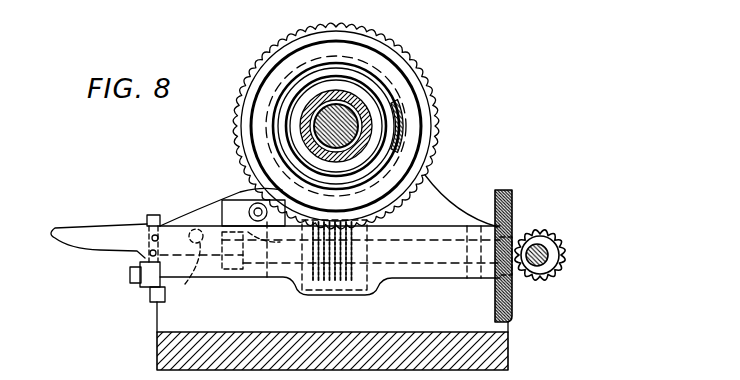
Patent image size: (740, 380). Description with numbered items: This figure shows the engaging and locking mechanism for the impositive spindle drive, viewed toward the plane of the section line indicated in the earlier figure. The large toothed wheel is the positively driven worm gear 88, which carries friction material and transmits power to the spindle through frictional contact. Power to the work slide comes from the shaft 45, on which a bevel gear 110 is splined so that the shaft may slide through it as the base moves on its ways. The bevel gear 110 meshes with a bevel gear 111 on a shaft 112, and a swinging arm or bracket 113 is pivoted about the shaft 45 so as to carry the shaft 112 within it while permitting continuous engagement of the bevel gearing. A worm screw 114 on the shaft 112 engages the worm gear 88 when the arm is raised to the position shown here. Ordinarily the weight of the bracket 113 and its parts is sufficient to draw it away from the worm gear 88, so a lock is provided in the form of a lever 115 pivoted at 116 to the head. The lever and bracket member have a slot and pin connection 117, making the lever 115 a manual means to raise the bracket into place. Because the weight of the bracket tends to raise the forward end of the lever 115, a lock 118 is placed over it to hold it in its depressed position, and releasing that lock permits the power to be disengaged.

The worm gear 88 is at (421, 97).
The bevel gear 110 is at (533, 226).
The shaft 45 is at (546, 249).
The bevel gear 111 is at (505, 193).
The shaft 112 is at (438, 258).
The swinging arm or bracket 113 is at (432, 237).
The worm screw 114 is at (332, 297).
The lever 115 is at (202, 212).
The pivot 116 is at (187, 283).
The slot and pin connection 117 is at (252, 200).
The lock 118 is at (125, 226).